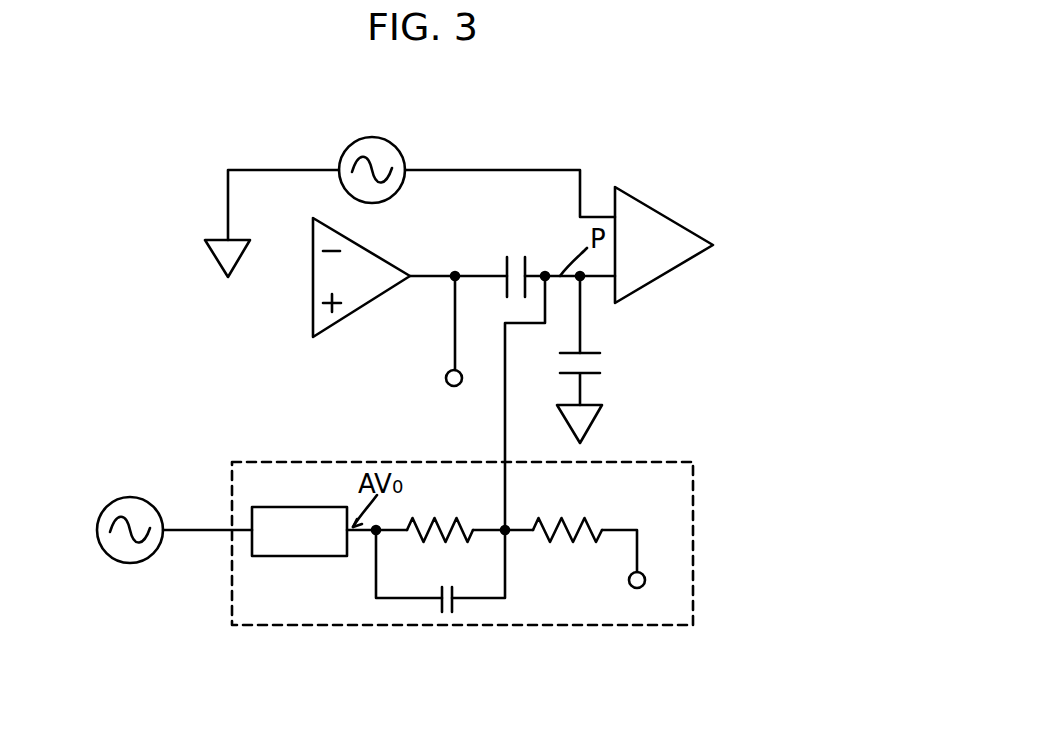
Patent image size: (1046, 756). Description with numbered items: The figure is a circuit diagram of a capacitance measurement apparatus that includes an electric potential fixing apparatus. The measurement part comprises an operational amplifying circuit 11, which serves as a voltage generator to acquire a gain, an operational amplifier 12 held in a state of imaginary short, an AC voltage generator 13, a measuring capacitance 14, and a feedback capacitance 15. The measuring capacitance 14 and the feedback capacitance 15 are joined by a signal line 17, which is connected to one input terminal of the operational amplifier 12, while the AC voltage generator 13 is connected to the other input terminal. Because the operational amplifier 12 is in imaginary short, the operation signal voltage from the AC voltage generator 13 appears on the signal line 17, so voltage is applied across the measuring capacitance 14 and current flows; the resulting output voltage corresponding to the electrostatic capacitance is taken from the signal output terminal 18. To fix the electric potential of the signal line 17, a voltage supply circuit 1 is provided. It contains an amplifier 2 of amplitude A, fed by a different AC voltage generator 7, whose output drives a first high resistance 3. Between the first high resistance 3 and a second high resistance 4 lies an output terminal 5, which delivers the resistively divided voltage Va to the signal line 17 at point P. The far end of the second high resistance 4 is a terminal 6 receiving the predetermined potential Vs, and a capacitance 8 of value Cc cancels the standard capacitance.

The voltage supply circuit 1 is at (697, 482).
The amplifier 2 is at (298, 556).
The first high resistance 3 is at (440, 537).
The second high resistance 4 is at (563, 540).
The output terminal 5 is at (503, 535).
The terminal 6 is at (637, 590).
The AC voltage generator 7 is at (145, 498).
The capacitance to cancel the standard capacitance 8 is at (455, 603).
The operational amplifying circuit 11 is at (375, 253).
The operational amplifier 12 is at (680, 218).
The AC voltage generator 13 is at (382, 137).
The measuring capacitance 14 is at (597, 363).
The feedback capacitance 15 is at (515, 257).
The signal line 17 is at (582, 323).
The signal output terminal 18 is at (445, 378).